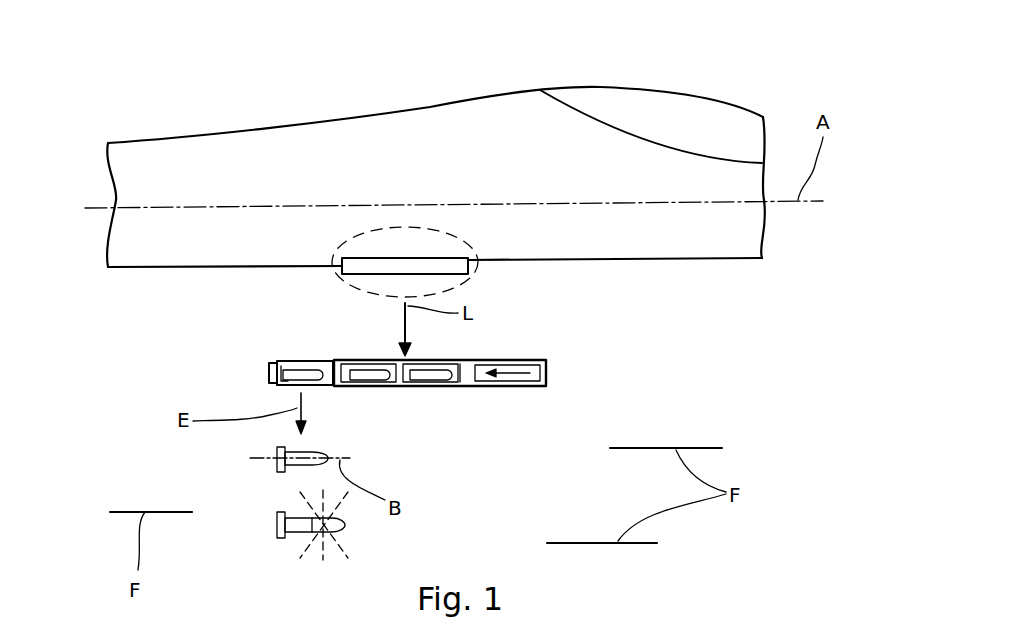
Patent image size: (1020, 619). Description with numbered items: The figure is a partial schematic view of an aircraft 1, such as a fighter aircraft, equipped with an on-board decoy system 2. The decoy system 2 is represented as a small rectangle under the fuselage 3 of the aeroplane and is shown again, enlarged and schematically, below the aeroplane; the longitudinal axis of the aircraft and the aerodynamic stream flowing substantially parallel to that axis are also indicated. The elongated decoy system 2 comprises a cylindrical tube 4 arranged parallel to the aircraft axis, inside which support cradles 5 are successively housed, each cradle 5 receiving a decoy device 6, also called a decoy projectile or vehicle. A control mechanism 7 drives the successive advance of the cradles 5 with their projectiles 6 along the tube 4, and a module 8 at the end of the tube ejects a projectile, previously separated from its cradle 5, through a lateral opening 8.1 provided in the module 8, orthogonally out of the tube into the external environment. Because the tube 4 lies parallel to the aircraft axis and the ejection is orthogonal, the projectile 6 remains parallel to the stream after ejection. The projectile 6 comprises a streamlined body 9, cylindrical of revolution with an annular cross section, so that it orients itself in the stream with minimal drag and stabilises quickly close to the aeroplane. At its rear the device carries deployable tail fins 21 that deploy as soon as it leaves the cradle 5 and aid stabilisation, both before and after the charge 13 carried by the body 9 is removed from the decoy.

The aircraft 1 is at (632, 76).
The decoy system 2 is at (402, 238).
The fuselage 3 is at (698, 252).
The cylindrical tube 4 is at (508, 359).
The support cradle 5 is at (277, 361).
The decoy device 6 is at (325, 393).
The control mechanism 7 is at (522, 385).
The ejection module 8 is at (308, 361).
The lateral opening 8.1 is at (287, 390).
The streamlined body 9 is at (300, 466).
The charge 13 is at (318, 536).
The deployable tail fins 21 is at (275, 446).